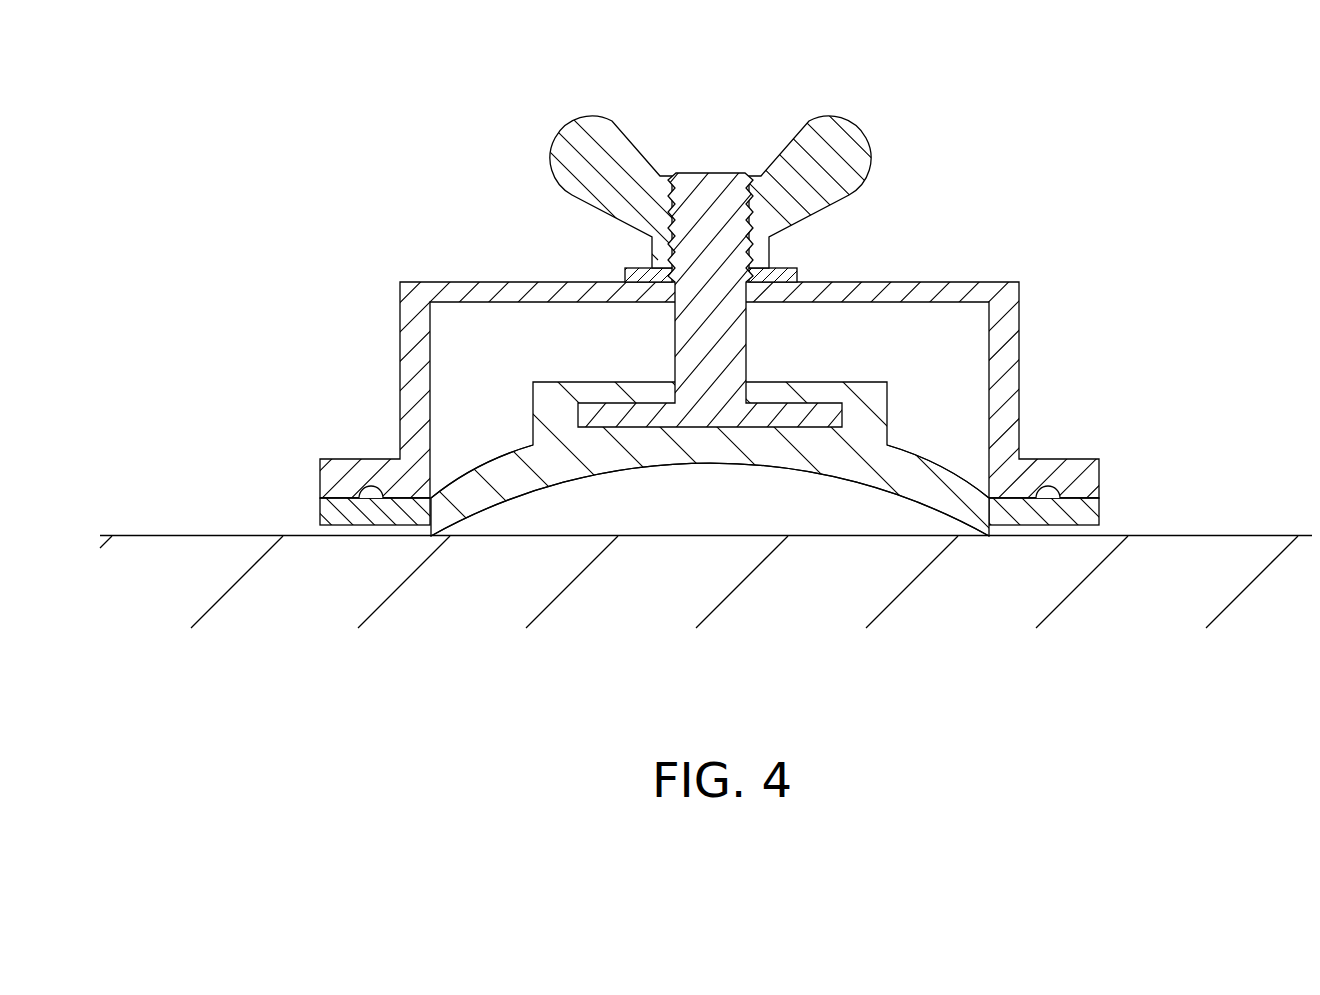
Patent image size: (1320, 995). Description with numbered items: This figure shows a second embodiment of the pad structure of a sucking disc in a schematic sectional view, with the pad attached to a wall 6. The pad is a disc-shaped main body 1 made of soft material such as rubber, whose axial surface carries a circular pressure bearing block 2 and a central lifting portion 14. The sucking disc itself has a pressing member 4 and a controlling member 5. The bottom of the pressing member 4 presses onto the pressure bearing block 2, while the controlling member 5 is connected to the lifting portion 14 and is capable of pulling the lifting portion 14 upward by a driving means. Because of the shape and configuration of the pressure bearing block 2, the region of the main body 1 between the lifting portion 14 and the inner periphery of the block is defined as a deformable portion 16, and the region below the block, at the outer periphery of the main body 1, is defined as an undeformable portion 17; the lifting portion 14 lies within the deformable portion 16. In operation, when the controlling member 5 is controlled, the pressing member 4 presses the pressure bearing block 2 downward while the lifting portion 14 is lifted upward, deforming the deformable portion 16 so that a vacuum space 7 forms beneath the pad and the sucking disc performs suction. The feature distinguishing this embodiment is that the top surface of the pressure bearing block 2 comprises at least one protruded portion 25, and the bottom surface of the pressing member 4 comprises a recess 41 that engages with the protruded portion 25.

The main body 1 is at (660, 397).
The pressure bearing block 2 is at (433, 471).
The pressing member 4 is at (932, 292).
The controlling member 5 is at (852, 134).
The wall 6 is at (198, 535).
The vacuum space 7 is at (830, 507).
The lifting portion 14 is at (700, 183).
The deformable portion 16 is at (542, 483).
The undeformable portion 17 is at (347, 522).
The protruded portion 25 is at (377, 487).
The recess 41 is at (358, 493).